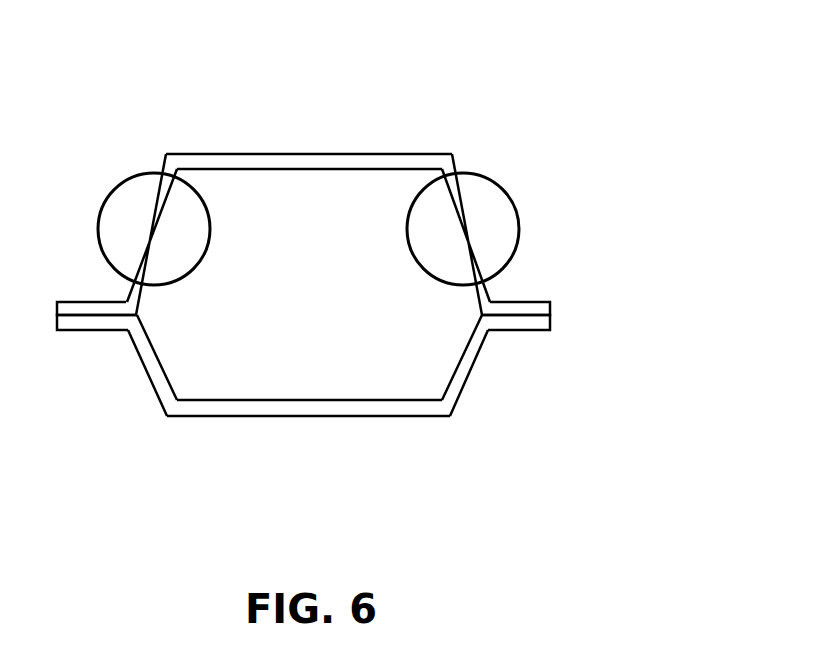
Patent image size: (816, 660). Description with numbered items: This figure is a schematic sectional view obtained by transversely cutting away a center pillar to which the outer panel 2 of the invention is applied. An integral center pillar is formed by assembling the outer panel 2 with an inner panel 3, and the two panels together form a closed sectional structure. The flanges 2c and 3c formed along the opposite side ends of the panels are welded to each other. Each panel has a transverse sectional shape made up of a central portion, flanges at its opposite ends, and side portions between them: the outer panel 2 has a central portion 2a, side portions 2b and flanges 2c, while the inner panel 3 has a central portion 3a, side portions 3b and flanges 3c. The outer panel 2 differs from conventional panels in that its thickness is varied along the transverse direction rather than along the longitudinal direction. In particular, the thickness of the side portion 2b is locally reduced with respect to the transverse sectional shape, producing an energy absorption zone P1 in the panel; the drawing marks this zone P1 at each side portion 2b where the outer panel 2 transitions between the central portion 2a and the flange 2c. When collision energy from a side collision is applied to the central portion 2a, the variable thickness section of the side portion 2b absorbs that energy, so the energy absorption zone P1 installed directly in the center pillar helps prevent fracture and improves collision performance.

The outer panel 2 is at (367, 164).
The central portion 2a is at (408, 154).
The side portion 2b is at (458, 200).
The flange 2c is at (547, 300).
The inner panel 3 is at (363, 422).
The central portion 3a is at (313, 417).
The side portion 3b is at (472, 372).
The flange 3c is at (533, 332).
The energy absorption zone P1 is at (309, 229).